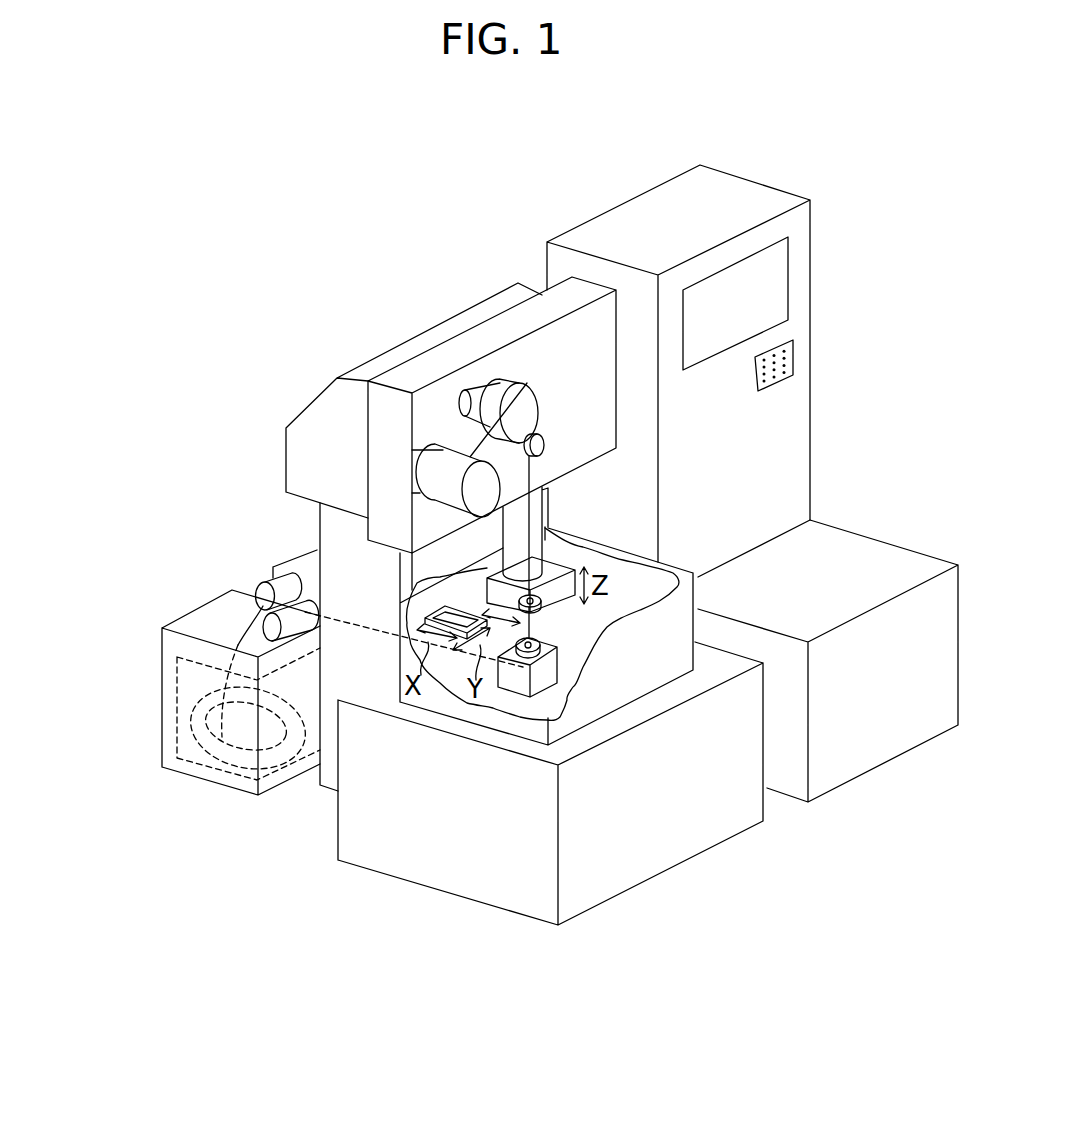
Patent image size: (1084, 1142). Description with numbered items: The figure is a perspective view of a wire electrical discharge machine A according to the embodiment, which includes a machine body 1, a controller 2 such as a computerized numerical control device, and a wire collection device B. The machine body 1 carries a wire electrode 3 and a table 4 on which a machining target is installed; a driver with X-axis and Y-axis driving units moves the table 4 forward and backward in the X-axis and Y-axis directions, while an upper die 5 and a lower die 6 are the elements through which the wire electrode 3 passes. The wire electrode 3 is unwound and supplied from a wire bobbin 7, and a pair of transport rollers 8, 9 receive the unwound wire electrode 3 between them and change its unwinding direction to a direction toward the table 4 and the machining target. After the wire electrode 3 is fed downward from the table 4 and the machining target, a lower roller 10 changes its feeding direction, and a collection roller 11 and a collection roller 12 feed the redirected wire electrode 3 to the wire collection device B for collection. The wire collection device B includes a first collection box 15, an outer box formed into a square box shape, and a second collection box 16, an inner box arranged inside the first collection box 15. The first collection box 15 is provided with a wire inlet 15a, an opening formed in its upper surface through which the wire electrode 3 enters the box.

The machine body 1 is at (356, 356).
The controller 2 is at (630, 188).
The wire electrode 3 is at (546, 504).
The table 4 is at (428, 612).
The upper die 5 is at (548, 605).
The lower die 6 is at (560, 656).
The wire bobbin 7 is at (448, 460).
The transport roller 8 is at (520, 400).
The transport roller 9 is at (544, 441).
The lower roller 10 is at (522, 670).
The collection roller 11 is at (278, 580).
The collection roller 12 is at (270, 614).
The first collection box 15 is at (155, 678).
The wire inlet 15a is at (207, 622).
The second collection box 16 is at (158, 730).
The wire electrical discharge machine A is at (227, 301).
The wire collection device B is at (201, 625).